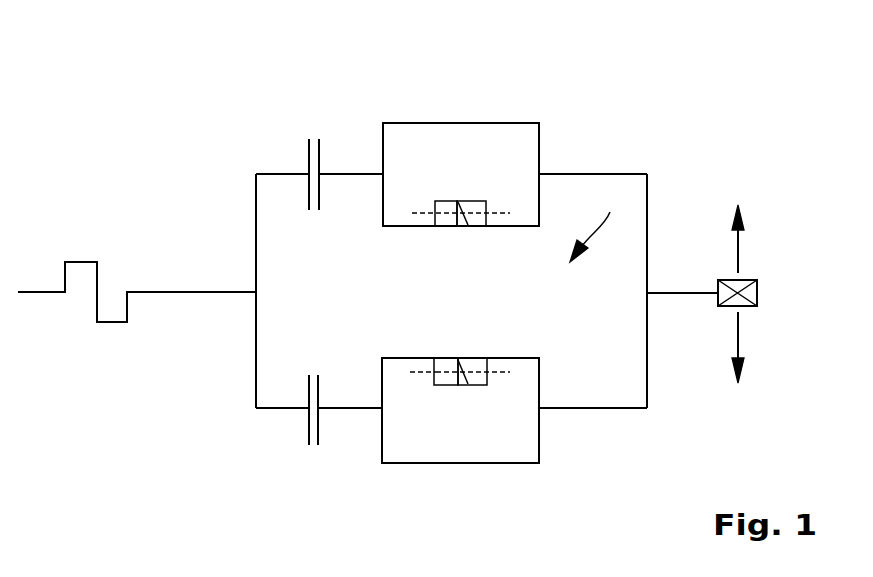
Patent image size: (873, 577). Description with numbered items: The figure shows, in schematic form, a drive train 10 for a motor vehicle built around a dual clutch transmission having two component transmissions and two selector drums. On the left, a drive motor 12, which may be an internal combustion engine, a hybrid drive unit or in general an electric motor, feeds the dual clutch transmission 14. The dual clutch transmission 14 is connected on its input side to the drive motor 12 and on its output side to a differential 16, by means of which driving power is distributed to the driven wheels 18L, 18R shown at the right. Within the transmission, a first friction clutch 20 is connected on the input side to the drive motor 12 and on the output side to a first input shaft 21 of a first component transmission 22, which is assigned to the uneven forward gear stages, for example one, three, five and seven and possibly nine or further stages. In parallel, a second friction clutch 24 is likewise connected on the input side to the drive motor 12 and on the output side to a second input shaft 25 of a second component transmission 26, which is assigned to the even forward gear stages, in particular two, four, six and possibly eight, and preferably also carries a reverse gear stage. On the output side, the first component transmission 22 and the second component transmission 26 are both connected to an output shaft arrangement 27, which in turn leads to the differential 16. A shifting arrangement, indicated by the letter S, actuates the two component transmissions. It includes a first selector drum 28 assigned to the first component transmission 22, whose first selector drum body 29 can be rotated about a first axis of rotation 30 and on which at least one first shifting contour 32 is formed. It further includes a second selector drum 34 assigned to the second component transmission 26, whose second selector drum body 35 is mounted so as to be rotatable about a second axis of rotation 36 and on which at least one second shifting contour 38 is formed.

The drive train 10 is at (146, 113).
The drive motor 12 is at (83, 260).
The dual clutch transmission 14 is at (627, 84).
The differential 16 is at (726, 278).
The driven wheel 18R is at (738, 245).
The driven wheel 18L is at (738, 337).
The first friction clutch 20 is at (307, 147).
The first input shaft 21 is at (353, 172).
The first component transmission 22 is at (462, 122).
The second friction clutch 24 is at (305, 437).
The second input shaft 25 is at (352, 413).
The second component transmission 26 is at (462, 465).
The output shaft arrangement 27 is at (587, 146).
The first selector drum 28 is at (442, 213).
The first selector drum body 29 is at (435, 208).
The first axis of rotation 30 is at (507, 212).
The first shifting contour 32 is at (467, 212).
The second selector drum 34 is at (470, 370).
The second selector drum body 35 is at (430, 378).
The second axis of rotation 36 is at (505, 370).
The second shifting contour 38 is at (445, 370).